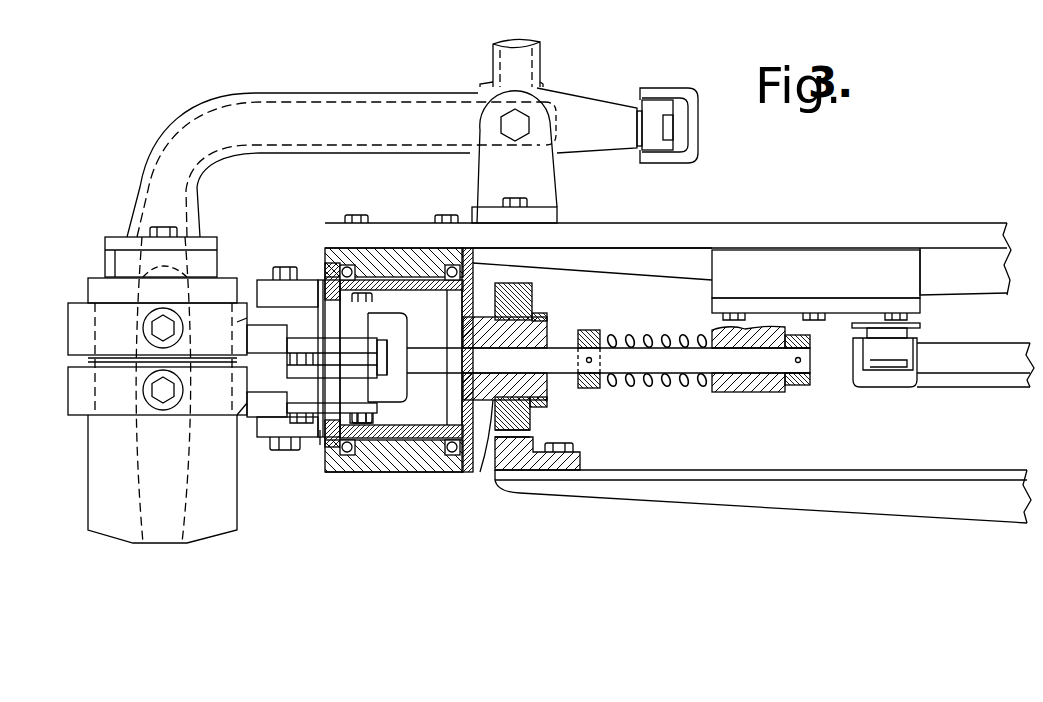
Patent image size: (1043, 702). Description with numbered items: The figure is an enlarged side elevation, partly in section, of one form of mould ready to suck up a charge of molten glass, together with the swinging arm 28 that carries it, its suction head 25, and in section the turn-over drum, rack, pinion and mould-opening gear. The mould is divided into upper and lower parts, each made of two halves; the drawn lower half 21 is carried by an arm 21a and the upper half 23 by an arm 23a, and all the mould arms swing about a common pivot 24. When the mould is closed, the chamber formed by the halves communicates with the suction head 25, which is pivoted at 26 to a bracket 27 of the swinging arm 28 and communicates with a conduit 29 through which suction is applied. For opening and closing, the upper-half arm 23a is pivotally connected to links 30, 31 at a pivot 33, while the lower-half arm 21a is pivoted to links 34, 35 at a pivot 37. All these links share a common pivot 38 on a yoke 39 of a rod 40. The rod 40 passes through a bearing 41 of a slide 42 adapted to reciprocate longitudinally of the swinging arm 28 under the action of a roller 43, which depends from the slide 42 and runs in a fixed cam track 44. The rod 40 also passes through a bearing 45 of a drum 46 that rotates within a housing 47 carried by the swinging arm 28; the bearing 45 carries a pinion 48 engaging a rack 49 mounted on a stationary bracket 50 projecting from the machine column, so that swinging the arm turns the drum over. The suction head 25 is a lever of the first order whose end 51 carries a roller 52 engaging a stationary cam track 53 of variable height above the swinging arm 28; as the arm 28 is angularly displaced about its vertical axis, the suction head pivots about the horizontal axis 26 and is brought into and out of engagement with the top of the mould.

The lower half of mould 21 is at (230, 473).
The arm of lower mould half 21a is at (247, 403).
The upper half of mould 23 is at (103, 288).
The arm of upper mould half 23a is at (222, 330).
The common pivot 24 is at (297, 450).
The suction head 25 is at (133, 262).
The pivot of suction head 26 is at (528, 120).
The bracket 27 is at (485, 173).
The swinging arm 28 is at (895, 233).
The conduit 29 is at (515, 60).
The link 30 is at (333, 308).
The link 31 is at (297, 342).
The pivot connection 33 is at (295, 367).
The link 34 is at (357, 373).
The link 35 is at (320, 440).
The pivot connection 37 is at (300, 413).
The common pivot of links 38 is at (357, 362).
The yoke 39 is at (392, 343).
The rod 40 is at (548, 353).
The bearing of slide 41 is at (737, 387).
The slide 42 is at (816, 285).
The roller 43 is at (872, 353).
The cam track 44 is at (897, 380).
The bearing of drum 45 is at (483, 398).
The drum 46 is at (428, 467).
The housing 47 is at (395, 462).
The pinion 48 is at (530, 417).
The rack 49 is at (517, 465).
The bracket 50 is at (728, 492).
The end of suction head 51 is at (600, 108).
The roller 52 is at (652, 108).
The cam track 53 is at (663, 163).